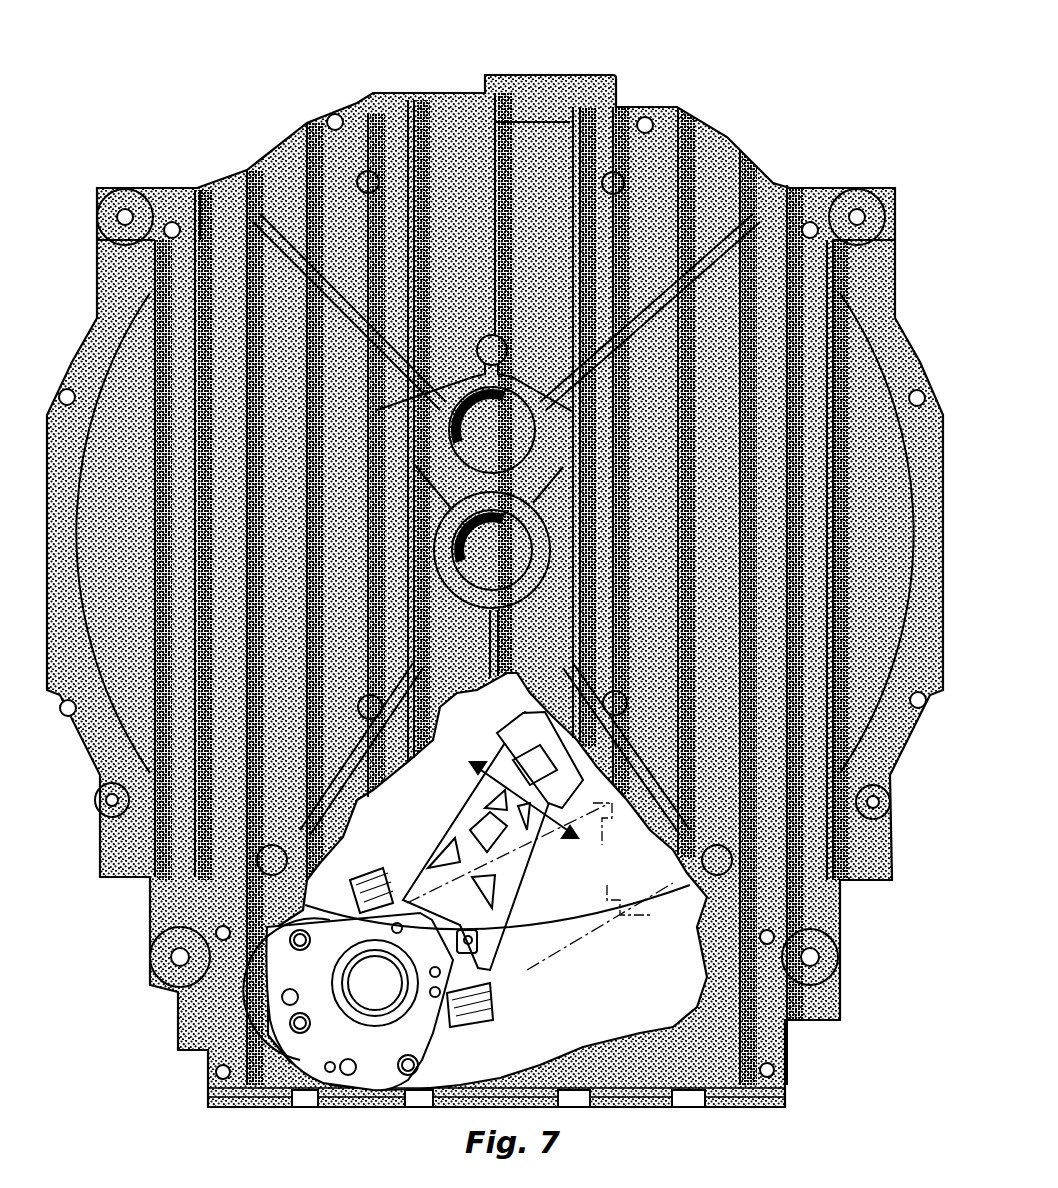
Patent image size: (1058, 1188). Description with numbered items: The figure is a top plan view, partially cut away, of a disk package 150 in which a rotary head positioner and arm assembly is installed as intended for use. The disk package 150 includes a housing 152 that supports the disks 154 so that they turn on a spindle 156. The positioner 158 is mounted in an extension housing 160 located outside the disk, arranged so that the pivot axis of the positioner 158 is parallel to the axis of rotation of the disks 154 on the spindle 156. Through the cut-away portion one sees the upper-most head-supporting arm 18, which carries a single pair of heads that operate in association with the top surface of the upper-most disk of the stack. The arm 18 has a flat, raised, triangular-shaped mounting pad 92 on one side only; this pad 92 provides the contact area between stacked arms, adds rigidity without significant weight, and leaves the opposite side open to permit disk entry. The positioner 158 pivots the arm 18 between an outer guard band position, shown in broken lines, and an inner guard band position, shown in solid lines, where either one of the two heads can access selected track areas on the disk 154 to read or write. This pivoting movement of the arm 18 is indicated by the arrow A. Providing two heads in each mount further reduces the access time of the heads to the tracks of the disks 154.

The disk package 150 is at (544, 63).
The housing 152 is at (737, 165).
The disks 154 is at (407, 850).
The spindle 156 is at (487, 585).
The positioner 158 is at (369, 1108).
The extension housing 160 is at (815, 1030).
The head-supporting arm 18 is at (458, 830).
The mounting pad 92 is at (473, 958).
The arrow A is at (492, 760).